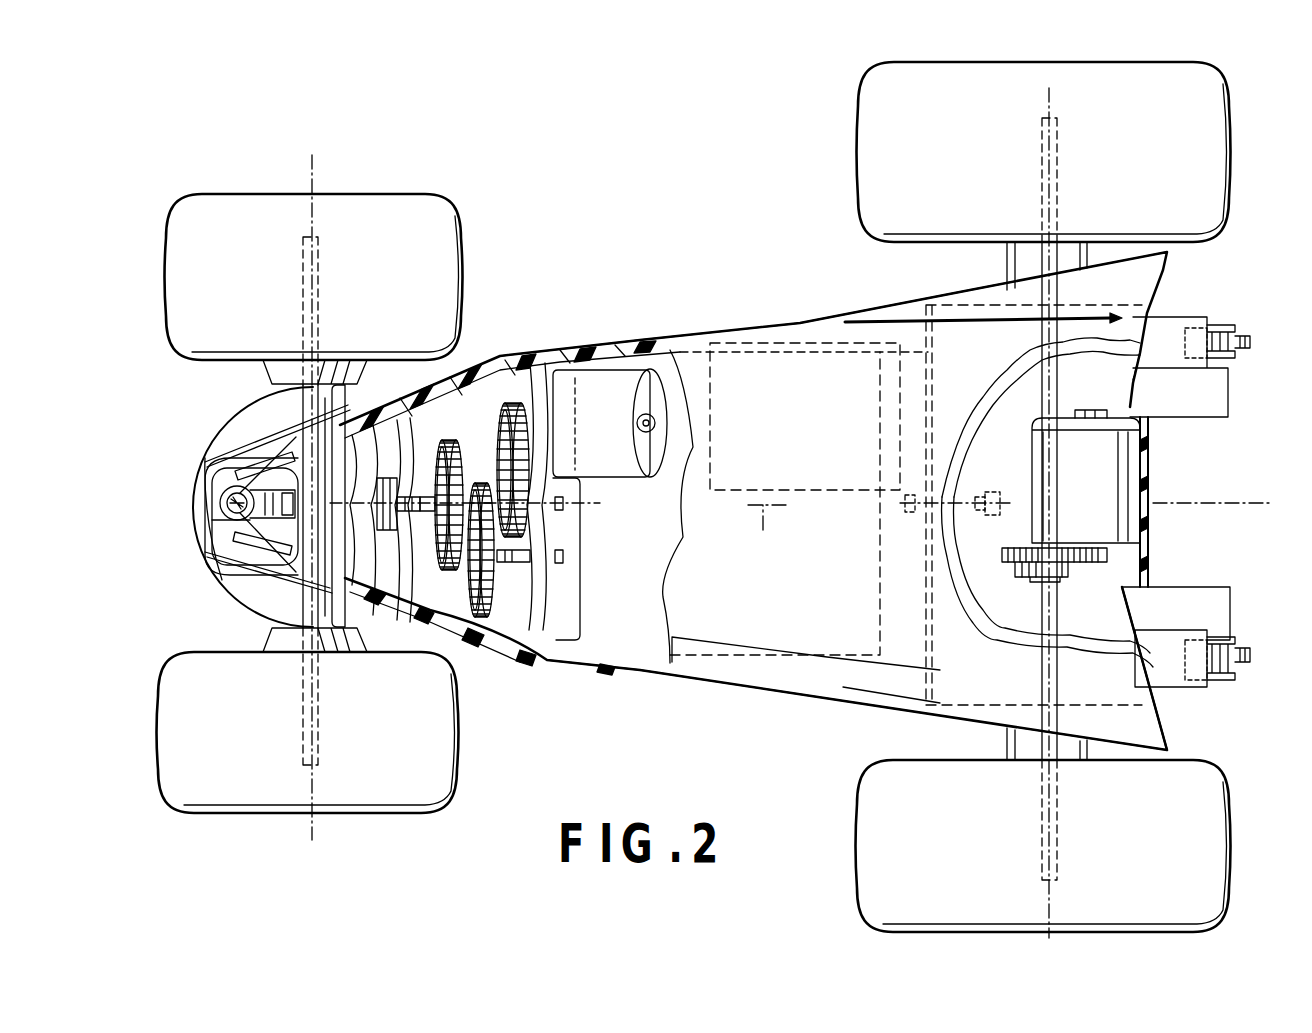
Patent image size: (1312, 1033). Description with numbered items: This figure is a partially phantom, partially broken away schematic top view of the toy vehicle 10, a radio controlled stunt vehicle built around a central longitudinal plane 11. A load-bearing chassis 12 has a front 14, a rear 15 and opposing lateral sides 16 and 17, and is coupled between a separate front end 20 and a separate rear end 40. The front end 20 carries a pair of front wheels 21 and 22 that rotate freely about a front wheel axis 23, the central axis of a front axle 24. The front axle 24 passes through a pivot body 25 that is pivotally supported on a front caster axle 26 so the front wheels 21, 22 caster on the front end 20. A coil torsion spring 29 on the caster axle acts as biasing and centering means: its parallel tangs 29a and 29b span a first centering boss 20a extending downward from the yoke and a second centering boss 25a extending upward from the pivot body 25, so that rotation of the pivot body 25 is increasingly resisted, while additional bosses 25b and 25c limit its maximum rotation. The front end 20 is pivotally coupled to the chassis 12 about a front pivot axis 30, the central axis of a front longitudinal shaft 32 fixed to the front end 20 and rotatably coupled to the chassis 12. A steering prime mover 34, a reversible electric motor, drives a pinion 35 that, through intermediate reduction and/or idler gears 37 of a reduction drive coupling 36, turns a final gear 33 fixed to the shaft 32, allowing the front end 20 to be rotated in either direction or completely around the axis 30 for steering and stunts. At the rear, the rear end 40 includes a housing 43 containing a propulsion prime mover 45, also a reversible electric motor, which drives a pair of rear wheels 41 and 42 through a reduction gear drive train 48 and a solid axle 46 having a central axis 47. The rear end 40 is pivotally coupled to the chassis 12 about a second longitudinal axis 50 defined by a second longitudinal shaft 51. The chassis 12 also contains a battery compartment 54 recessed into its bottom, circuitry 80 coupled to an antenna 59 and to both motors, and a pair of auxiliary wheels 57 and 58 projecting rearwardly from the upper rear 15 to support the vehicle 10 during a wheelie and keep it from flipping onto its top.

The toy vehicle 10 is at (671, 160).
The central longitudinal plane 11 is at (760, 530).
The chassis 12 is at (668, 338).
The front 14 is at (372, 606).
The rear 15 is at (1125, 683).
The lateral side 16 is at (718, 336).
The lateral side 17 is at (680, 685).
The front end 20 is at (193, 484).
The first centering boss 20a is at (218, 588).
The front wheel 21 is at (192, 237).
The front wheel 22 is at (178, 717).
The front wheel axis 23 is at (318, 180).
The front axle 24 is at (322, 300).
The pivot body 25 is at (252, 422).
The second centering boss 25a is at (212, 520).
The additional boss 25b is at (258, 452).
The additional boss 25c is at (222, 560).
The front caster axle 26 is at (220, 503).
The coil torsion spring 29 is at (240, 475).
The tang 29a is at (296, 432).
The tang 29b is at (268, 577).
The front pivot axis 30 is at (585, 510).
The front longitudinal shaft 32 is at (419, 470).
The final gear 33 is at (408, 445).
The steering prime mover 34 is at (582, 406).
The pinion 35 is at (560, 345).
The reduction drive coupling 36 is at (499, 410).
The intermediate reduction and/or idler gears 37 is at (493, 453).
The rear end 40 is at (1148, 318).
The rear wheel 41 is at (1230, 147).
The rear wheel 42 is at (1230, 797).
The housing 43 is at (992, 640).
The propulsion prime mover 45 is at (1063, 488).
The solid axle 46 is at (1055, 162).
The central axis 47 is at (1052, 95).
The reduction gear drive train 48 is at (1076, 565).
The second longitudinal axis 50 is at (985, 493).
The second longitudinal shaft 51 is at (985, 514).
The battery compartment 54 is at (772, 566).
The auxiliary wheel 57 is at (1250, 342).
The auxiliary wheel 58 is at (1250, 657).
The antenna 59 is at (868, 322).
The circuitry 80 is at (797, 418).